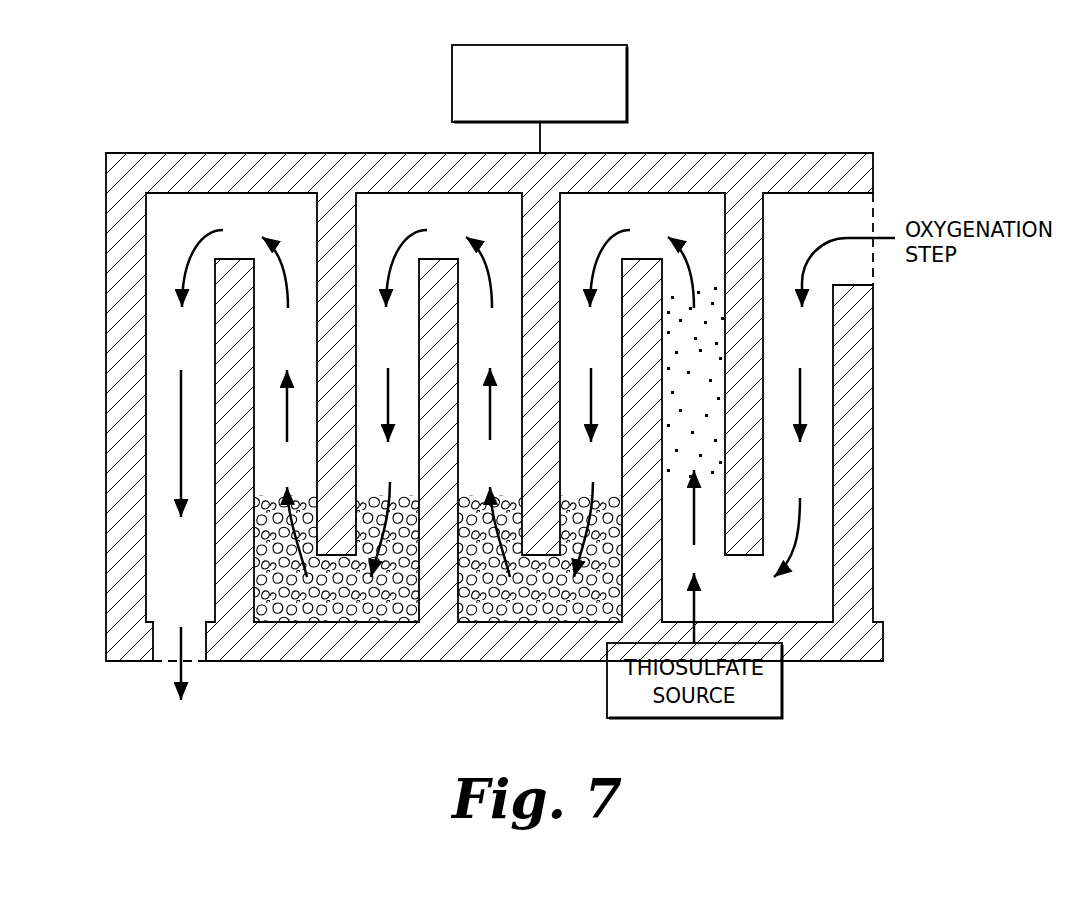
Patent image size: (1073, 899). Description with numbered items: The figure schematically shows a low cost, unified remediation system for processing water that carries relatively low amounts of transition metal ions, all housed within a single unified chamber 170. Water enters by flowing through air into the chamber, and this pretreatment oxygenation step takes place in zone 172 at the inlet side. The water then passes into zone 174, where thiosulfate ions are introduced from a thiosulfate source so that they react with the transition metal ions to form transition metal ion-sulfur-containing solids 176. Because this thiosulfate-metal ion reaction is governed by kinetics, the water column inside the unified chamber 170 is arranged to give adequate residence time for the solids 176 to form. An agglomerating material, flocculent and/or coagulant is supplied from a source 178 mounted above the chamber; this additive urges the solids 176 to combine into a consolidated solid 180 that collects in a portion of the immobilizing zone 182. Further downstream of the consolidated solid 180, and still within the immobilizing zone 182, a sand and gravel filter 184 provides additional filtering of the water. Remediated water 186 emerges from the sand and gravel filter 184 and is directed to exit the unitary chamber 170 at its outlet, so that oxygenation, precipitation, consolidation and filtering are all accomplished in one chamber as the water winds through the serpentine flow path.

The unified chamber 170 is at (782, 75).
The oxygenation zone 172 is at (817, 354).
The thiosulfate introduction zone 174 is at (760, 604).
The transition metal ion-sulfur-containing solids 176 is at (714, 404).
The source of agglomerating material, flocculent and/or coagulant 178 is at (452, 83).
The consolidated solid 180 is at (503, 603).
The immobilizing zone 182 is at (304, 352).
The sand and gravel filter 184 is at (315, 605).
The remediated water 186 is at (181, 438).